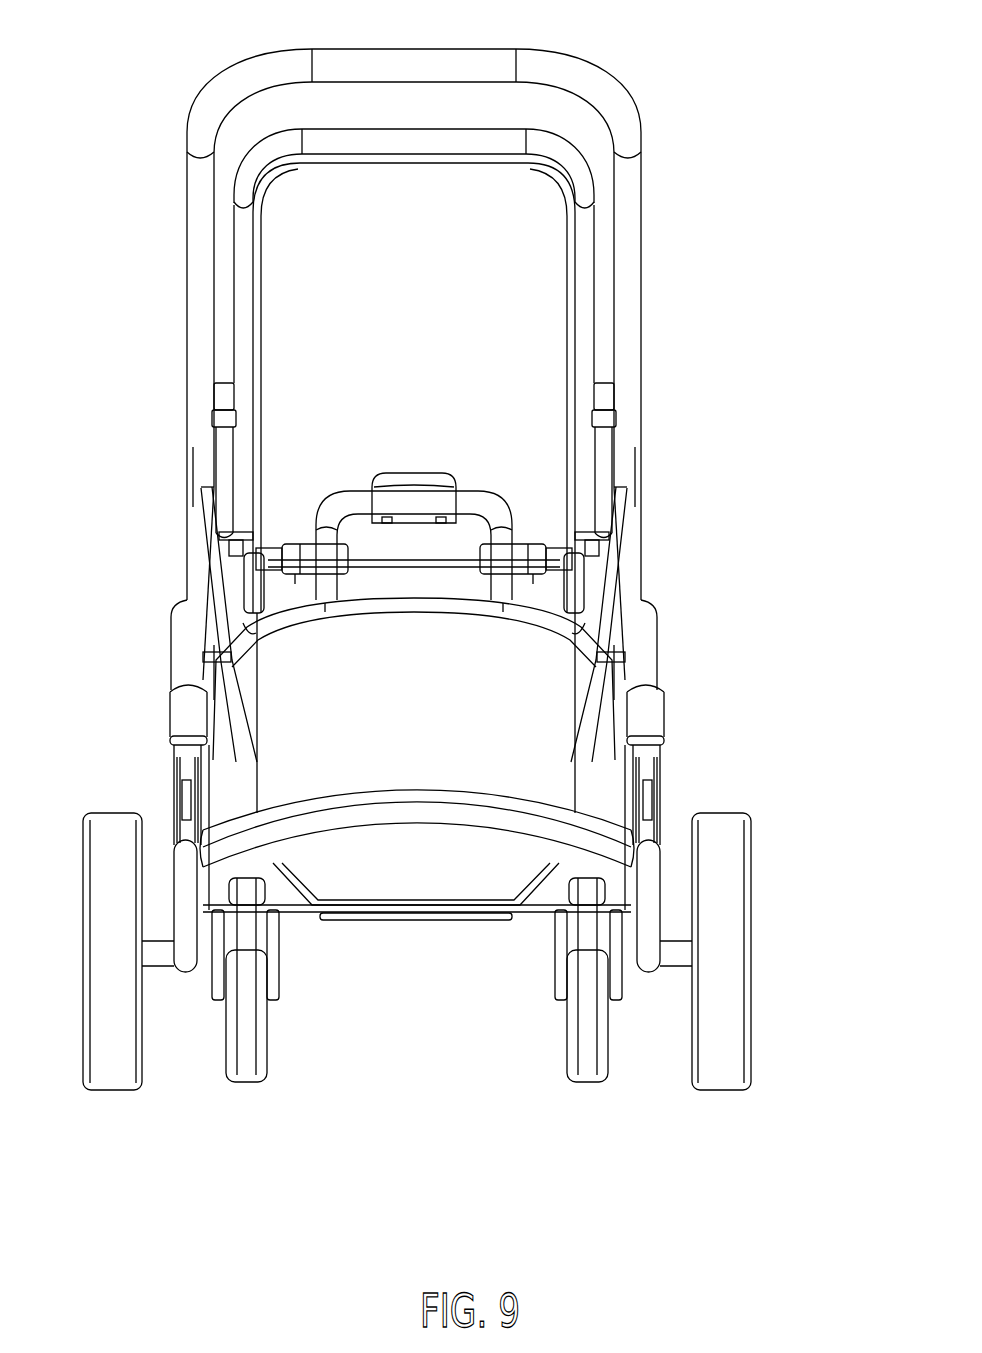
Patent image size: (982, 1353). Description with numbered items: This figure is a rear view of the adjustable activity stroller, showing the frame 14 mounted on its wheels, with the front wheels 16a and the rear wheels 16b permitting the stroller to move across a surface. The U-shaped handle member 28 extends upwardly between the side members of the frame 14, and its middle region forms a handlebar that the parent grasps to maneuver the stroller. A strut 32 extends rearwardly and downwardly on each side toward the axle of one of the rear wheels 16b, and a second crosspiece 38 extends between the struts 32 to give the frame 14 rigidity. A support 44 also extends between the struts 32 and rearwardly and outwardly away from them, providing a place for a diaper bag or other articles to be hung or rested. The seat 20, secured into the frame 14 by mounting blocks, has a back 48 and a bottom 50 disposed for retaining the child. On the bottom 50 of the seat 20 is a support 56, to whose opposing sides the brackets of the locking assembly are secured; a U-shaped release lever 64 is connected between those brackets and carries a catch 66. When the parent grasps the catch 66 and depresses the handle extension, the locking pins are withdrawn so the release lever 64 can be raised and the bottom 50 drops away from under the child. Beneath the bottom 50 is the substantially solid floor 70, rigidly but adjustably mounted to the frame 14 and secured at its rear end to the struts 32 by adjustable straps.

The frame 14 is at (460, 583).
The handle member 28 is at (446, 65).
The seat 20 is at (516, 242).
The back 48 is at (424, 304).
The strut 32 is at (185, 632).
The front wheels 16a is at (255, 1067).
The rear wheels 16b is at (112, 1070).
The floor 70 is at (310, 913).
The second crosspiece 38 is at (415, 813).
The bottom 50 is at (367, 717).
The support 44 is at (477, 608).
The release lever 64 is at (491, 507).
The catch 66 is at (410, 484).
The support 56 is at (542, 561).